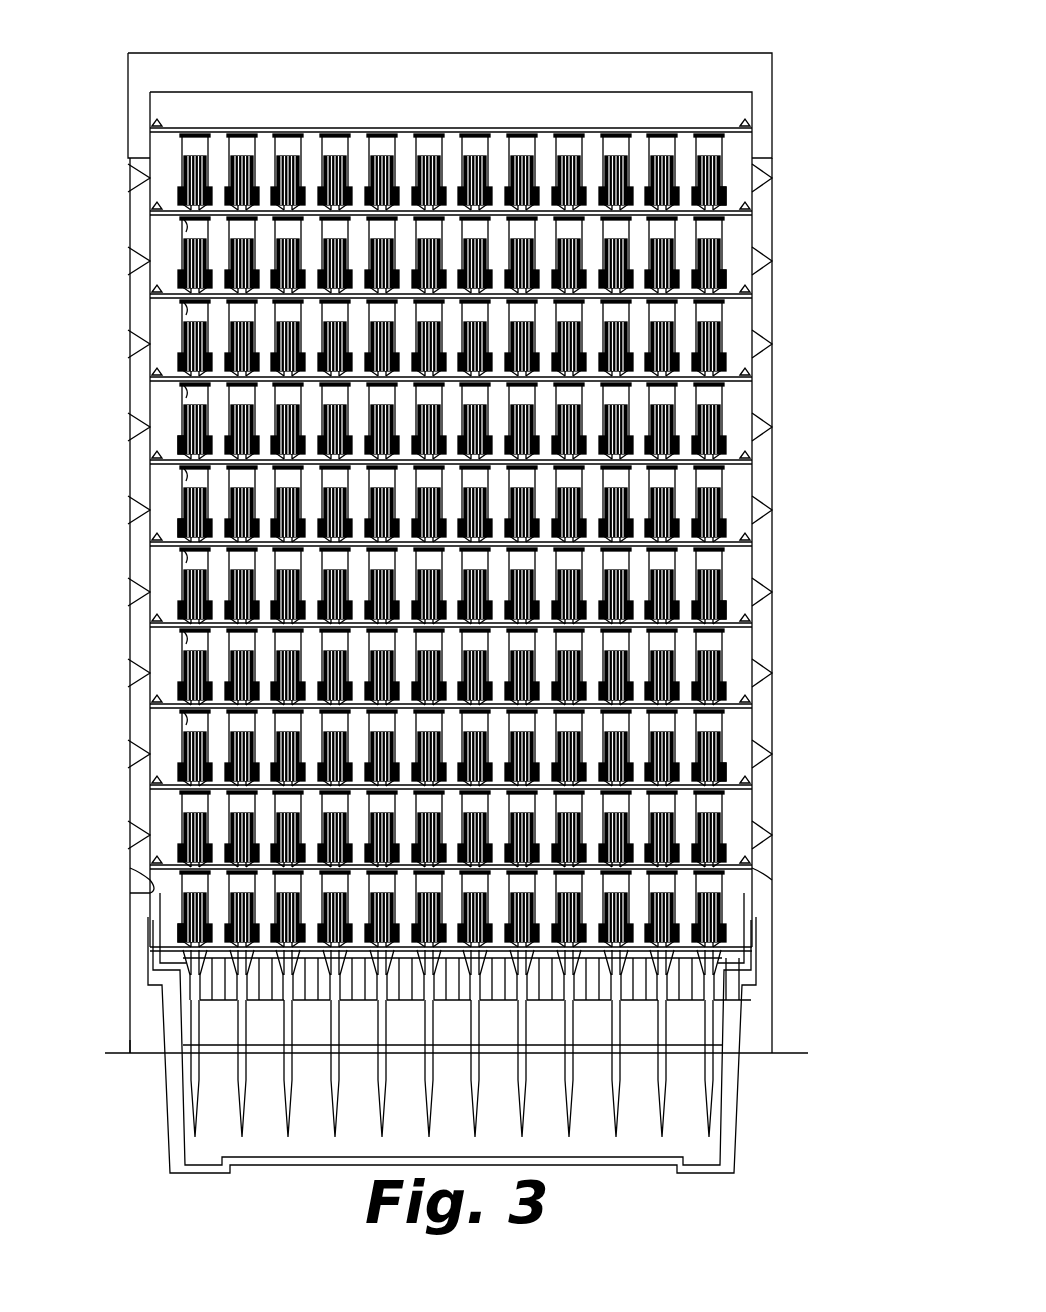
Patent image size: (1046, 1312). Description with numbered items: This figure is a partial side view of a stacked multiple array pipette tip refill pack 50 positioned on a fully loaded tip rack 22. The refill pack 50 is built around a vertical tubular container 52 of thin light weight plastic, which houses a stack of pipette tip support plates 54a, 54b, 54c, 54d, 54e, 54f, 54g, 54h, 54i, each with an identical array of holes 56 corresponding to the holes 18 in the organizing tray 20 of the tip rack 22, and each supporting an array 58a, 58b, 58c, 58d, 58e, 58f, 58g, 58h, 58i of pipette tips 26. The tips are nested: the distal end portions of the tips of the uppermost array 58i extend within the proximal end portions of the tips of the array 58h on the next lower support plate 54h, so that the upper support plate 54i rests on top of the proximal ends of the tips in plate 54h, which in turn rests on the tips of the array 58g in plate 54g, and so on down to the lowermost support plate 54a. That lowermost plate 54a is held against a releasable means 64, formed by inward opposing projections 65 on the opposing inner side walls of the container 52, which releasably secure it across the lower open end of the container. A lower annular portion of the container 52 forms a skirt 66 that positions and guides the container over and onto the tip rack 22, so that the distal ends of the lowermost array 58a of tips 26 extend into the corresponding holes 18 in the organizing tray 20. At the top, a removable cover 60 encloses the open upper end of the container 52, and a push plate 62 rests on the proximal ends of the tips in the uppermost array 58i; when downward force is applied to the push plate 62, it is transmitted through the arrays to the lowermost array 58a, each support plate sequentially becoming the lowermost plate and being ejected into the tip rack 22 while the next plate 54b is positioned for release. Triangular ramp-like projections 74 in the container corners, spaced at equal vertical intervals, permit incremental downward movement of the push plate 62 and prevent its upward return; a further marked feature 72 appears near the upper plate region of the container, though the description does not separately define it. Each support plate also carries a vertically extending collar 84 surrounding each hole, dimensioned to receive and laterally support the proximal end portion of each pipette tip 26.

The holes 18 is at (454, 1035).
The organizing tray 20 is at (180, 946).
The tip rack 22 is at (160, 1018).
The pipette tips 26 is at (716, 1082).
The stacked multiple array pipette tip refill pack 50 is at (170, 585).
The vertical tubular container 52 is at (128, 764).
The support plate 54a is at (752, 862).
The support plate 54b is at (752, 782).
The support plate 54c is at (752, 701).
The support plate 54d is at (752, 620).
The support plate 54e is at (752, 539).
The support plate 54f is at (752, 457).
The support plate 54g is at (752, 374).
The support plate 54h is at (752, 292).
The support plate 54i is at (752, 210).
The holes 56 is at (186, 228).
The array of pipette tips 58a is at (728, 805).
The array of pipette tips 58b is at (728, 724).
The array of pipette tips 58c is at (728, 643).
The array of pipette tips 58d is at (728, 562).
The array of pipette tips 58e is at (728, 480).
The array of pipette tips 58f is at (728, 397).
The array of pipette tips 58g is at (728, 315).
The array of pipette tips 58h is at (728, 232).
The array of pipette tips 58i is at (728, 150).
The removable cover 60 is at (774, 54).
The push plate 62 is at (642, 127).
The releasable means 64 is at (150, 878).
The inward projections 65 is at (140, 835).
The skirt 66 is at (135, 1050).
The upper frame 72 is at (750, 120).
The triangular shaped ramp-like projections 74 is at (153, 124).
The collar 84 is at (180, 445).